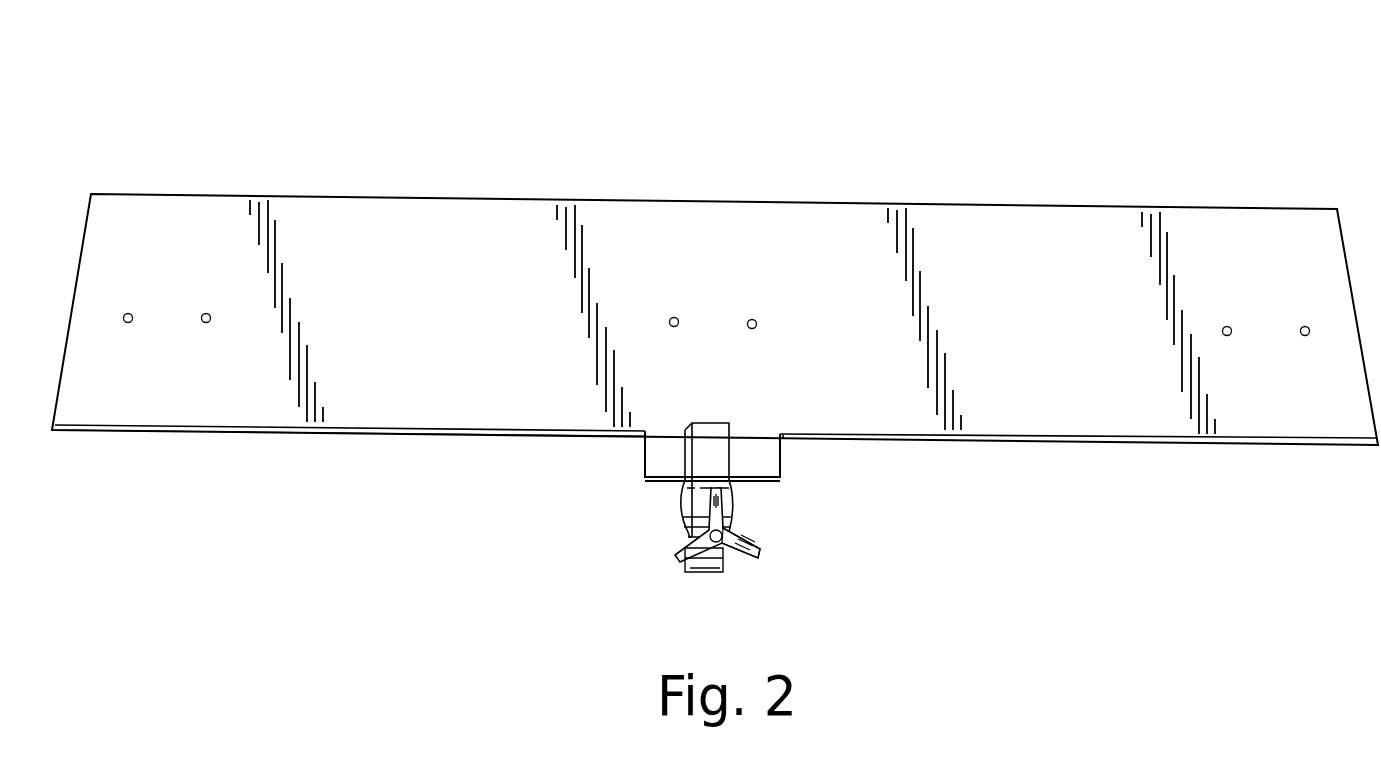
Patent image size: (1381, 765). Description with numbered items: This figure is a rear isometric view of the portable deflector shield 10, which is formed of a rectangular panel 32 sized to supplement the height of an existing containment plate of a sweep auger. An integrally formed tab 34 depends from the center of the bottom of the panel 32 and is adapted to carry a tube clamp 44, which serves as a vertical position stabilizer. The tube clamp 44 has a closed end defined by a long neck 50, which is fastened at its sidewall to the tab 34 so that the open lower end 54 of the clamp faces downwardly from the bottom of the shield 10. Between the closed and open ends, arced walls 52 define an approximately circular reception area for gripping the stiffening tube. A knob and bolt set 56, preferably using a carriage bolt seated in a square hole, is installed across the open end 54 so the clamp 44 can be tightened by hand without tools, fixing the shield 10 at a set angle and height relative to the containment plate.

The portable deflector shield 10 is at (124, 148).
The panel 32 is at (438, 210).
The tab 34 is at (645, 453).
The neck 50 is at (716, 428).
The arced walls 52 is at (682, 503).
The tube clamp 44 is at (734, 516).
The lower end 54 is at (688, 568).
The knob and bolt set 56 is at (760, 557).